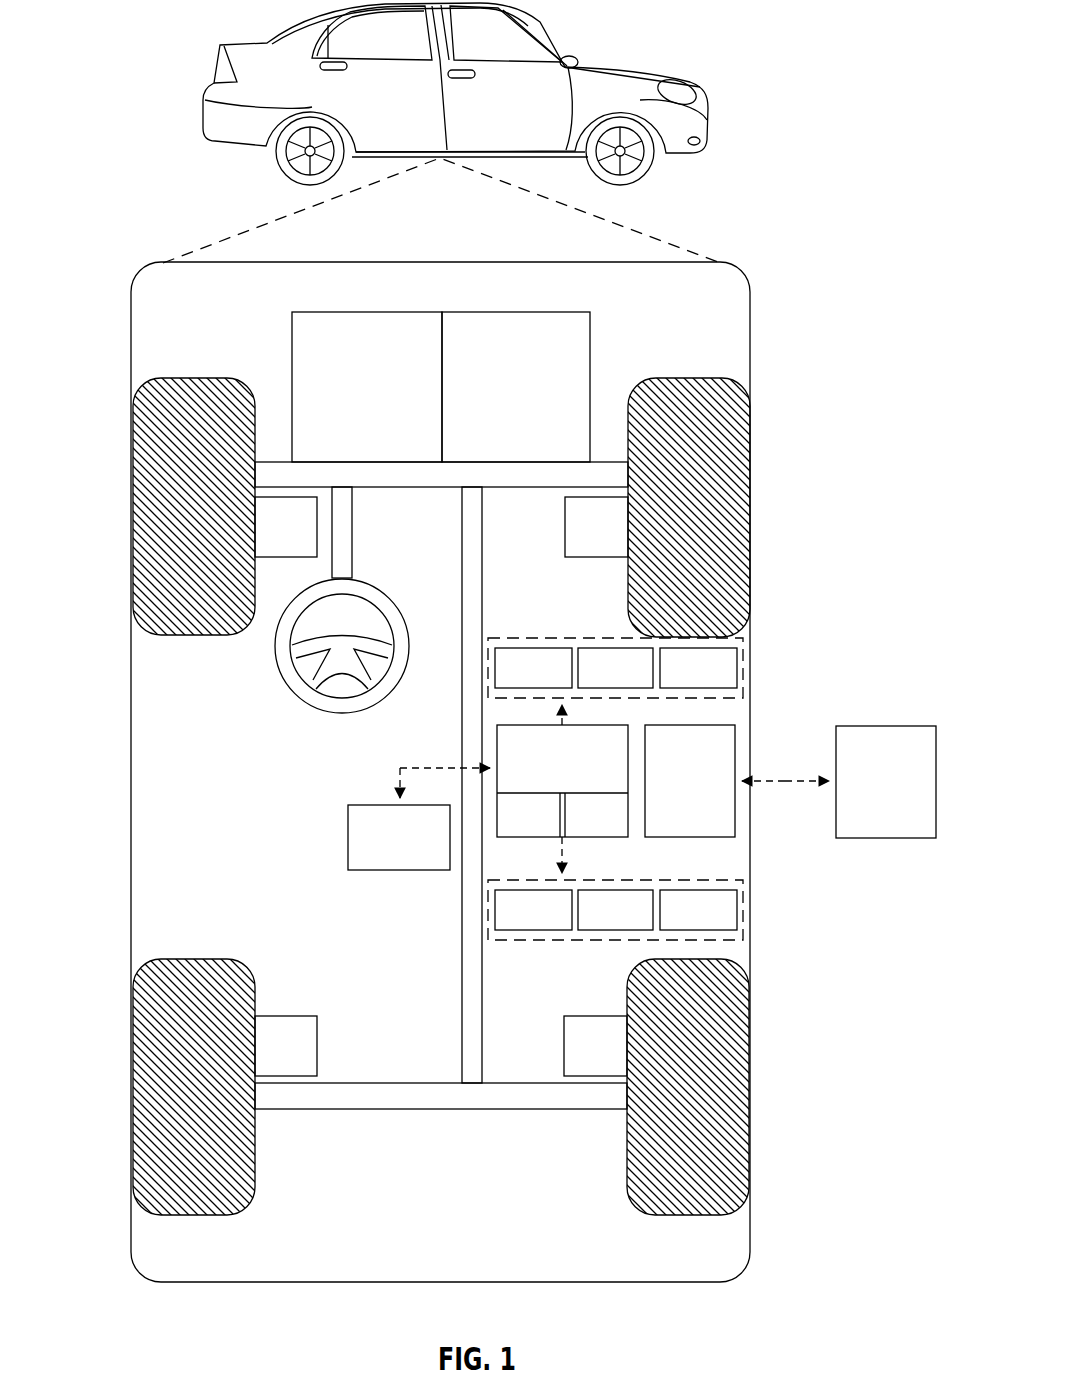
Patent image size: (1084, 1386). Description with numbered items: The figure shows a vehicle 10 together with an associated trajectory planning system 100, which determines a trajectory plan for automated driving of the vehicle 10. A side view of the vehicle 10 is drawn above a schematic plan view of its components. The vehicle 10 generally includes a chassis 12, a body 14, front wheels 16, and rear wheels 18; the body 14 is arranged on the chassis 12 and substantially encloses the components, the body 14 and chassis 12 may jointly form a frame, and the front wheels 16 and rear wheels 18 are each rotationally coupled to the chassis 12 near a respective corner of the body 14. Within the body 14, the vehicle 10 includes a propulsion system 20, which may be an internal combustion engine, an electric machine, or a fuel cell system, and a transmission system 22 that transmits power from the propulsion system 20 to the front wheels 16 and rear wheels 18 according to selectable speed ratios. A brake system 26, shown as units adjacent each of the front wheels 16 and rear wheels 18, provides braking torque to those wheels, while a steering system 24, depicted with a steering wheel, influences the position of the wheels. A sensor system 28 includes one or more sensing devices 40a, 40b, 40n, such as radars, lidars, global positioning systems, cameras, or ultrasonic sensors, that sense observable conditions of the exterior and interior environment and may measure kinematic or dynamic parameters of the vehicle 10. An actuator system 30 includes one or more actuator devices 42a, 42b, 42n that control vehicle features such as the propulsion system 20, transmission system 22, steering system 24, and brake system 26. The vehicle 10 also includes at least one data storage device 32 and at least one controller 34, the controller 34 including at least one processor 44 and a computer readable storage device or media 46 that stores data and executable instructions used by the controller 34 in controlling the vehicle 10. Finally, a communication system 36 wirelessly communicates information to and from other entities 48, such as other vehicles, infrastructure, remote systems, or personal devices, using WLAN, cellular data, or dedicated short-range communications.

The vehicle 10 is at (212, 73).
The trajectory planning system 100 is at (461, 769).
The chassis 12 is at (462, 957).
The body 14 is at (131, 733).
The front wheels 16 is at (193, 378).
The rear wheels 18 is at (195, 1215).
The propulsion system 20 is at (352, 398).
The transmission system 22 is at (501, 398).
The steering system 24 is at (362, 554).
The brake system 26 is at (271, 539).
The sensor system 28 is at (576, 638).
The actuator system 30 is at (580, 940).
The data storage device 32 is at (384, 849).
The controller 34 is at (547, 772).
The communication system 36 is at (675, 793).
The sensing device 40a is at (511, 681).
The sensing device 40b is at (593, 681).
The sensing device 40n is at (676, 681).
The actuator device 42a is at (511, 923).
The actuator device 42b is at (593, 923).
The actuator device 42n is at (676, 923).
The processor 44 is at (513, 827).
The computer readable storage device or media 46 is at (582, 827).
The other entities 48 is at (871, 793).